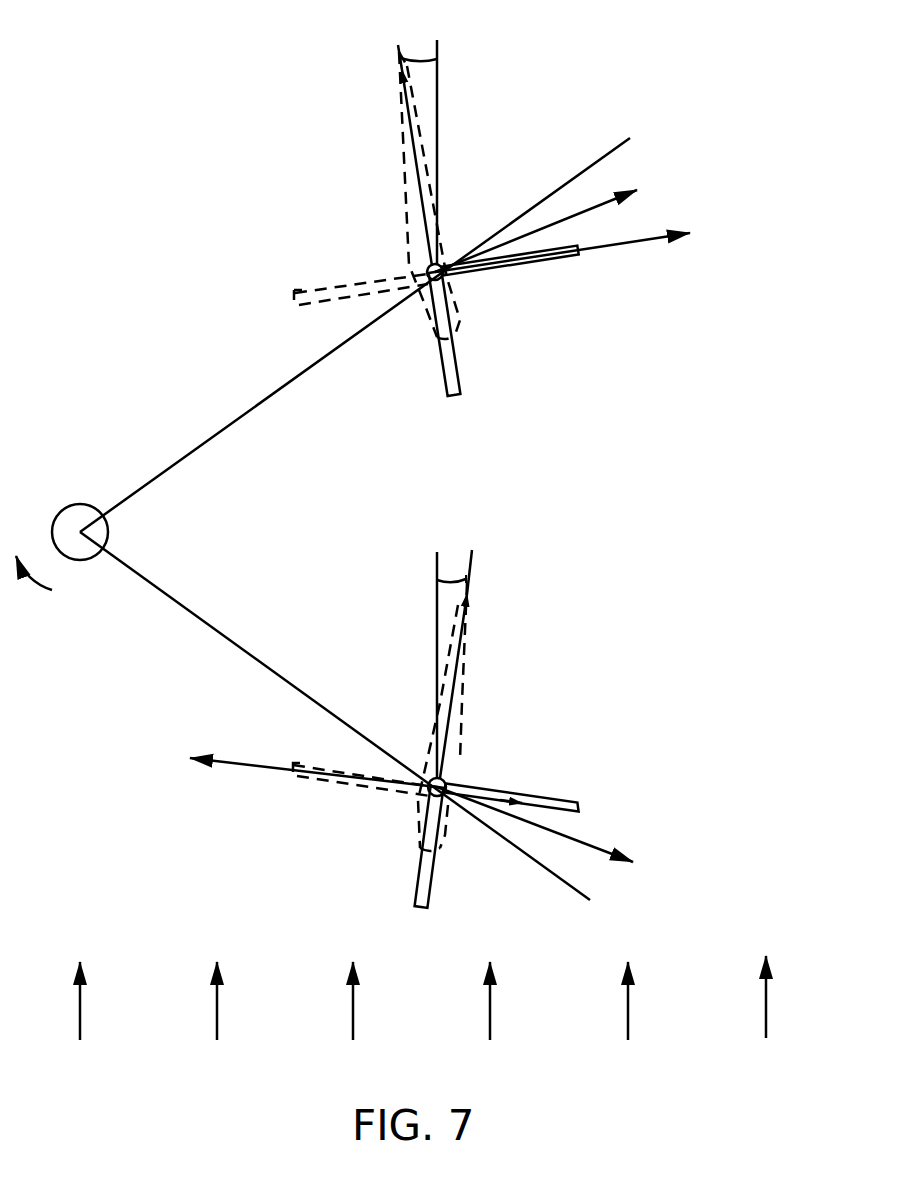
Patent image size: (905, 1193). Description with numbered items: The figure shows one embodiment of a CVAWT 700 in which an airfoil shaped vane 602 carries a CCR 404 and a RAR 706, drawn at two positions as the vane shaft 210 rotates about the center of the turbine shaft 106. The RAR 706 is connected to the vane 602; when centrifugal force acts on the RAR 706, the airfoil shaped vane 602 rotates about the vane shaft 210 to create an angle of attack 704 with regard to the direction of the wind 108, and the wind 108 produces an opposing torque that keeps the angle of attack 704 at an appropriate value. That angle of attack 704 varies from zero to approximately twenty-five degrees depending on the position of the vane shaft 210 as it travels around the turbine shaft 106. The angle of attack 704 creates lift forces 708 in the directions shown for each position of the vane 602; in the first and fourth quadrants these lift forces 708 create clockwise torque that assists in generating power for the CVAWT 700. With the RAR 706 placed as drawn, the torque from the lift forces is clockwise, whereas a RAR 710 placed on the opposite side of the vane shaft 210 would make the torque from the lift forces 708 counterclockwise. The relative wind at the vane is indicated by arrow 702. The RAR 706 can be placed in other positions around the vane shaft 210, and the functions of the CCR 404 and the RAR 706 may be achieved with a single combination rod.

The CVAWT 700 is at (155, 98).
The turbine shaft 106 is at (80, 504).
The wind 108 is at (767, 1009).
The vane shaft 210 is at (428, 266).
The CCR 404 is at (462, 381).
The angle of attack 704 is at (416, 58).
The airfoil shaped vane 602 is at (406, 220).
The RAR 706 is at (552, 262).
The relative wind direction 702 is at (613, 203).
The lift forces 708 is at (650, 243).
The RAR 710 is at (300, 292).